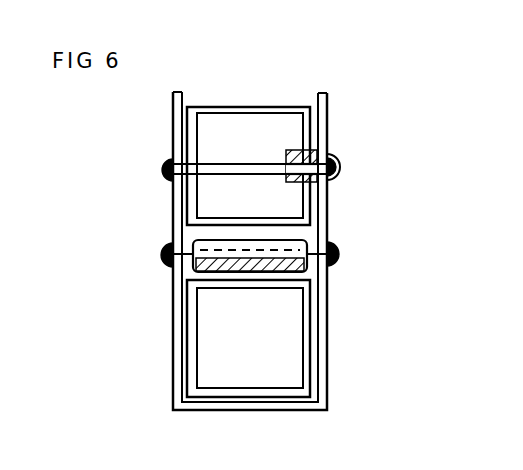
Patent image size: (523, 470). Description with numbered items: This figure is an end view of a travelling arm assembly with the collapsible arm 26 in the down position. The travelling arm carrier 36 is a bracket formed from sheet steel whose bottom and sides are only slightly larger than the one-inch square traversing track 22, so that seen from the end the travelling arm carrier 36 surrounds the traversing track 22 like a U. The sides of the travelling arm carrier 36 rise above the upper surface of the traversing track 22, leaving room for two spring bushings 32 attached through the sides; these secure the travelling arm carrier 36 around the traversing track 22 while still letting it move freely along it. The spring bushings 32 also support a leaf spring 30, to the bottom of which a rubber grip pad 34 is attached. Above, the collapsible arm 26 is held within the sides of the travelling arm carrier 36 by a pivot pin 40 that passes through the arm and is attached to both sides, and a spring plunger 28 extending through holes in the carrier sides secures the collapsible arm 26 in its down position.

The traversing track 22 is at (192, 362).
The collapsible arm 26 is at (255, 107).
The spring plunger 28 is at (338, 152).
The leaf spring 30 is at (324, 263).
The spring bushings 32 is at (163, 262).
The rubber grip pad 34 is at (283, 270).
The travelling arm carrier 36 is at (173, 200).
The pivot pin 40 is at (164, 167).